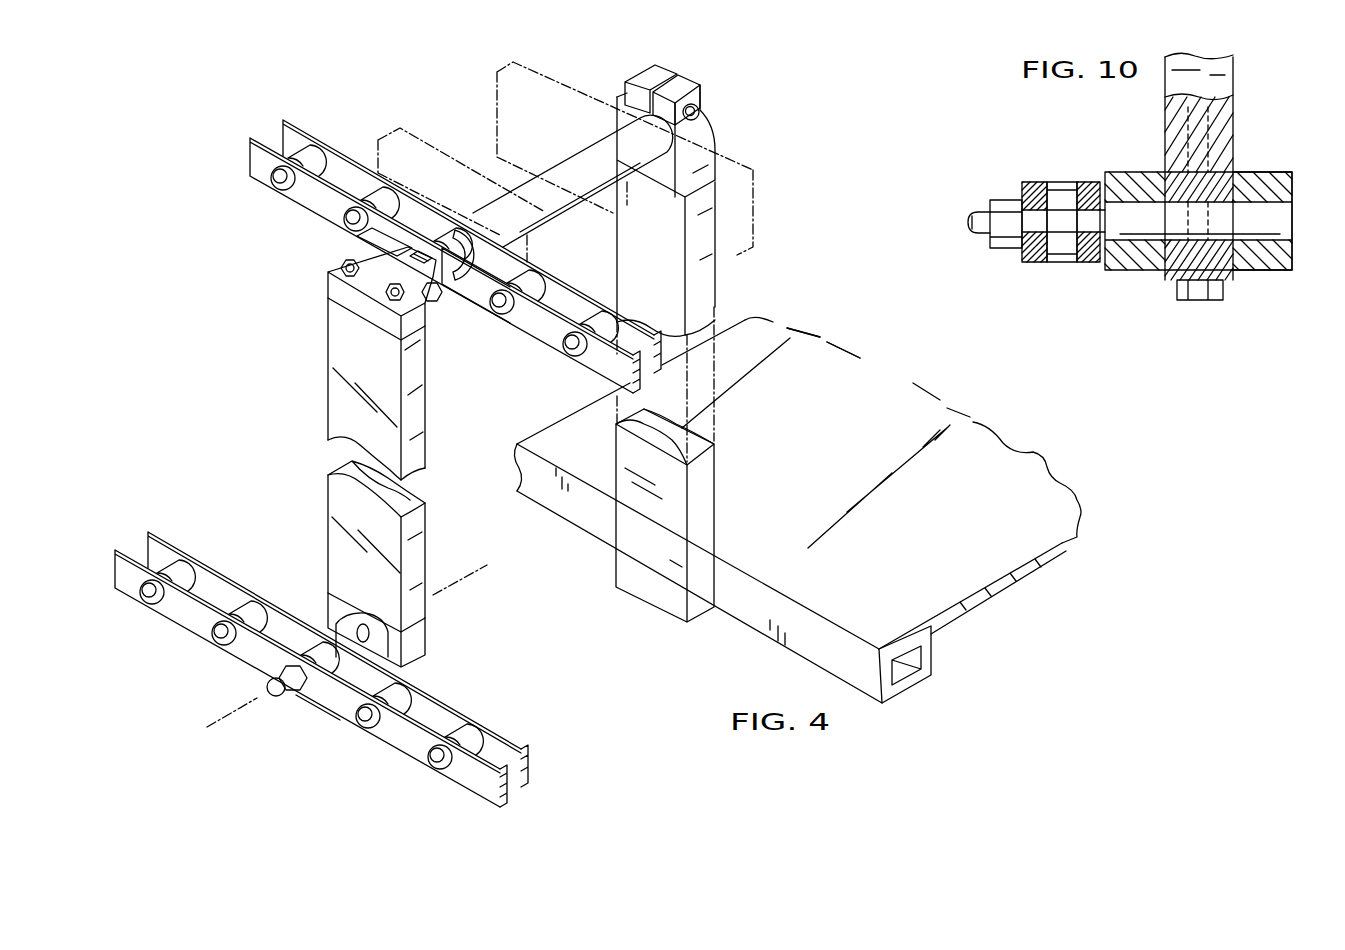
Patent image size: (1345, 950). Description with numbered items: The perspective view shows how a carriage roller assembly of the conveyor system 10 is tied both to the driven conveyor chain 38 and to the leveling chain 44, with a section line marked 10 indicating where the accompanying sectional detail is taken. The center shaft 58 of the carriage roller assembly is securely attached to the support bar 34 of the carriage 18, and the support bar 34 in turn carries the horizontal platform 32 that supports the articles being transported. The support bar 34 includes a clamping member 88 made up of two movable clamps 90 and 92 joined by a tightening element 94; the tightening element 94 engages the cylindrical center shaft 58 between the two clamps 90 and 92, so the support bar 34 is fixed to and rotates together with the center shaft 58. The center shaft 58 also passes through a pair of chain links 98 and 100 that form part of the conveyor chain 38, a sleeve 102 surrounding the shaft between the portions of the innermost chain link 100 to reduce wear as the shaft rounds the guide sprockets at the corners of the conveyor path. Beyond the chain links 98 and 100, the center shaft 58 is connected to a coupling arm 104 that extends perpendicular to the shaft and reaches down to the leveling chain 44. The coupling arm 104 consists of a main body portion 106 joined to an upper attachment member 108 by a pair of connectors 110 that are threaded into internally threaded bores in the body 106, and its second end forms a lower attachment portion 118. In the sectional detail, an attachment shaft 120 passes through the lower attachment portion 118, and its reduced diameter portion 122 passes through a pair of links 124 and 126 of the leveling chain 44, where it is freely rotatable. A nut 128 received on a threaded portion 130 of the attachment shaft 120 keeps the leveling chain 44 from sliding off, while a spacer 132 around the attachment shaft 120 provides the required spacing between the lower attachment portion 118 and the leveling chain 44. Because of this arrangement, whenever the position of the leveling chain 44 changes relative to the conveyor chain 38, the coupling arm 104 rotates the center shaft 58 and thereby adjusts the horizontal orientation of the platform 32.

In FIG. 4, the conveyor system 10 is at (232, 730).
In FIG. 4, the carriage 18 is at (860, 327).
In FIG. 4, the horizontal platform 32 is at (1034, 470).
In FIG. 4, the support bar 34 is at (704, 292).
In FIG. 4, the conveyor chain 38 is at (308, 133).
In FIG. 4, the leveling chain 44 is at (440, 705).
In FIG. 4, the center shaft 58 is at (573, 173).
In FIG. 4, the clamping member 88 is at (708, 132).
In FIG. 4, the movable clamp 90 is at (656, 72).
In FIG. 4, the movable clamp 92 is at (682, 88).
In FIG. 4, the tightening element 94 is at (700, 111).
In FIG. 4, the chain link 98 is at (376, 240).
In FIG. 4, the innermost chain link 100 is at (473, 294).
In FIG. 4, the sleeve 102 is at (475, 225).
In FIG. 4, the coupling arm 104 is at (315, 408).
In FIG. 4, the main body portion 106 is at (416, 411).
In FIG. 4, the upper attachment member 108 is at (337, 292).
In FIG. 4, the connectors 110 is at (390, 300).
In FIG. 4, the lower attachment portion 118 is at (422, 647).
In FIG. 10, the lower attachment portion 118 is at (1225, 138).
In FIG. 10, the attachment shaft 120 is at (1288, 220).
In FIG. 10, the reduced diameter portion 122 is at (1061, 220).
In FIG. 4, the link 124 is at (286, 610).
In FIG. 10, the link 124 is at (1093, 263).
In FIG. 4, the link 126 is at (334, 705).
In FIG. 10, the link 126 is at (1083, 262).
In FIG. 10, the nut 128 is at (1012, 245).
In FIG. 10, the threaded portion 130 is at (972, 222).
In FIG. 10, the spacer 132 is at (1135, 170).